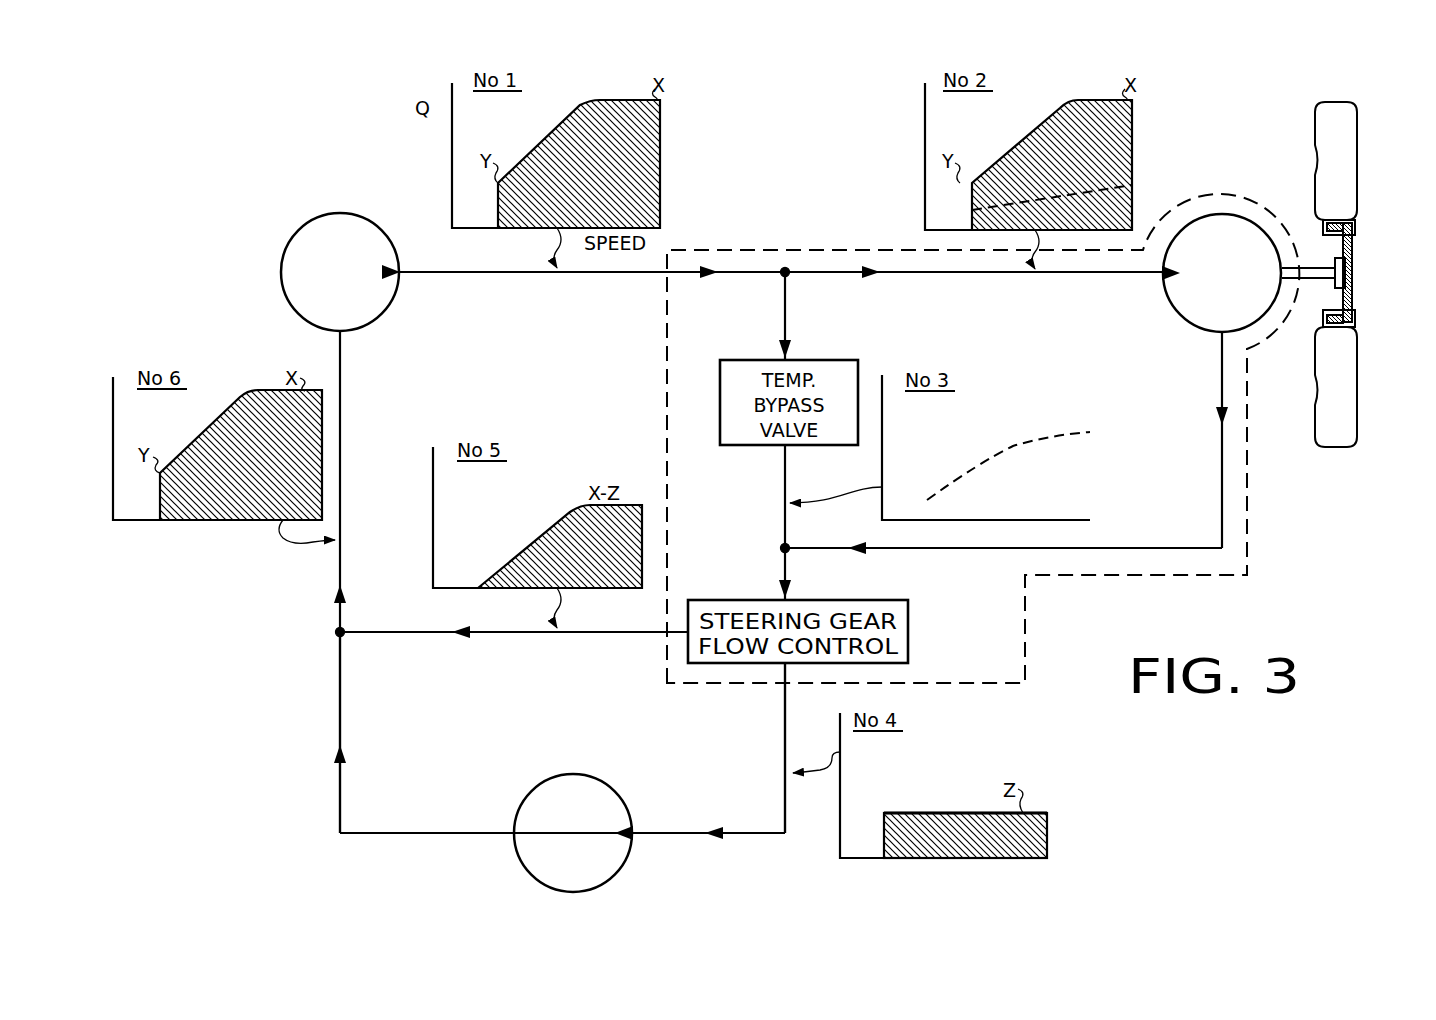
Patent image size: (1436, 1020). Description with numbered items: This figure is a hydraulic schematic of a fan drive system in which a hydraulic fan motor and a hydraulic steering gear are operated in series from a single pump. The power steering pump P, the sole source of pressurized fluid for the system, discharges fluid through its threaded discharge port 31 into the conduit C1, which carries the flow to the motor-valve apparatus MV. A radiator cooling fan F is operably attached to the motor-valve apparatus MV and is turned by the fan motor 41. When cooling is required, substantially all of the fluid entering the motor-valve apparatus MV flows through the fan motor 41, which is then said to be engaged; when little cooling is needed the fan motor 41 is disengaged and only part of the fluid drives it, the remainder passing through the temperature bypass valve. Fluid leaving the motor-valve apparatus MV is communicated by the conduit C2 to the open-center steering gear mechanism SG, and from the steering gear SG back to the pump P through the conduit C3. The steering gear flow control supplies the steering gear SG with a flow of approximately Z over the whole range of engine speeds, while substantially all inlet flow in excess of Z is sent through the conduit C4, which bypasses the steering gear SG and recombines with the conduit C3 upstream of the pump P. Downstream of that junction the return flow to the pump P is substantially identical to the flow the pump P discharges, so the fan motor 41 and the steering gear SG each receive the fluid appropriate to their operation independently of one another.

The threaded discharge port 31 is at (400, 266).
The fan motor 41 is at (1189, 329).
The power steering pump P is at (292, 226).
The radiator cooling fan F is at (1366, 211).
The steering gear mechanism SG is at (599, 772).
The motor-valve apparatus MV is at (830, 247).
The conduit C1 is at (515, 277).
The conduit C2 is at (782, 740).
The conduit C3 is at (337, 693).
The conduit C4 is at (503, 637).